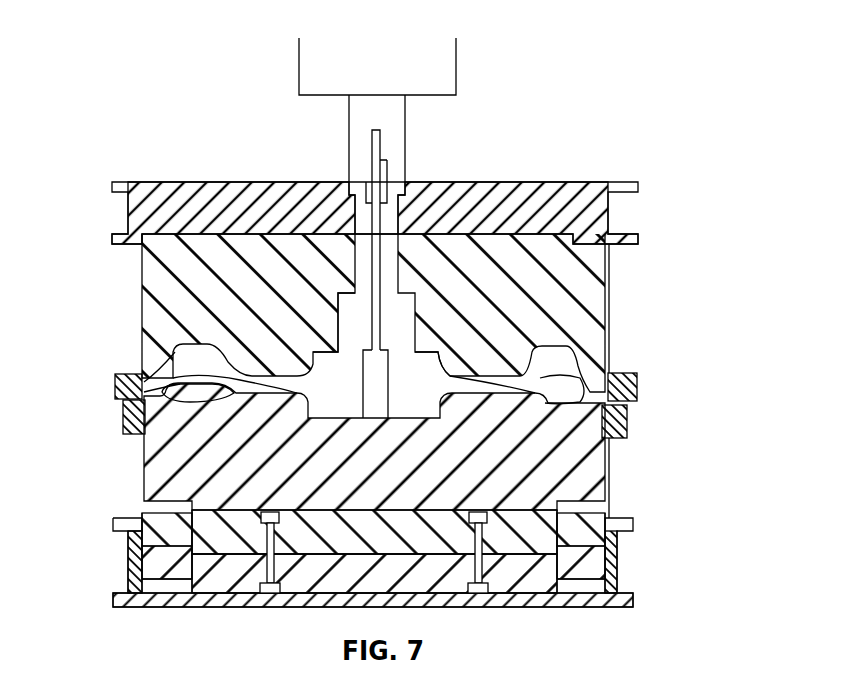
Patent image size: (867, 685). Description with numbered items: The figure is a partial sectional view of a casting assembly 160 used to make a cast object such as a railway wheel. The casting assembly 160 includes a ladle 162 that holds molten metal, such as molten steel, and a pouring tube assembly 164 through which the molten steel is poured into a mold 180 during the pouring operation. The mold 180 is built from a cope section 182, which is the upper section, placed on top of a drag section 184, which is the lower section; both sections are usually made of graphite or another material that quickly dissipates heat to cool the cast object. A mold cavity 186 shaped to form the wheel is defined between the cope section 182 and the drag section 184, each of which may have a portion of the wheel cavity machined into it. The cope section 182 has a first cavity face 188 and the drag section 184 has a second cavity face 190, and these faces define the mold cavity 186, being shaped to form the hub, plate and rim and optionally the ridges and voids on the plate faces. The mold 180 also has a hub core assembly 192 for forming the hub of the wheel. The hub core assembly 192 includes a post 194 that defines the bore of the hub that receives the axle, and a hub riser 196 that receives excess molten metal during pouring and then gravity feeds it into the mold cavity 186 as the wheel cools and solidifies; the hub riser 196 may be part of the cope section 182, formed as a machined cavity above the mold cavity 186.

The casting assembly 160 is at (111, 130).
The ladle 162 is at (458, 70).
The pouring tube assembly 164 is at (408, 142).
The mold 180 is at (668, 262).
The cope section 182 is at (598, 303).
The drag section 184 is at (598, 473).
The mold cavity 186 is at (564, 368).
The first cavity face 188 is at (146, 378).
The second cavity face 190 is at (131, 398).
The hub core assembly 192 is at (388, 250).
The post 194 is at (390, 368).
The hub riser 196 is at (343, 305).